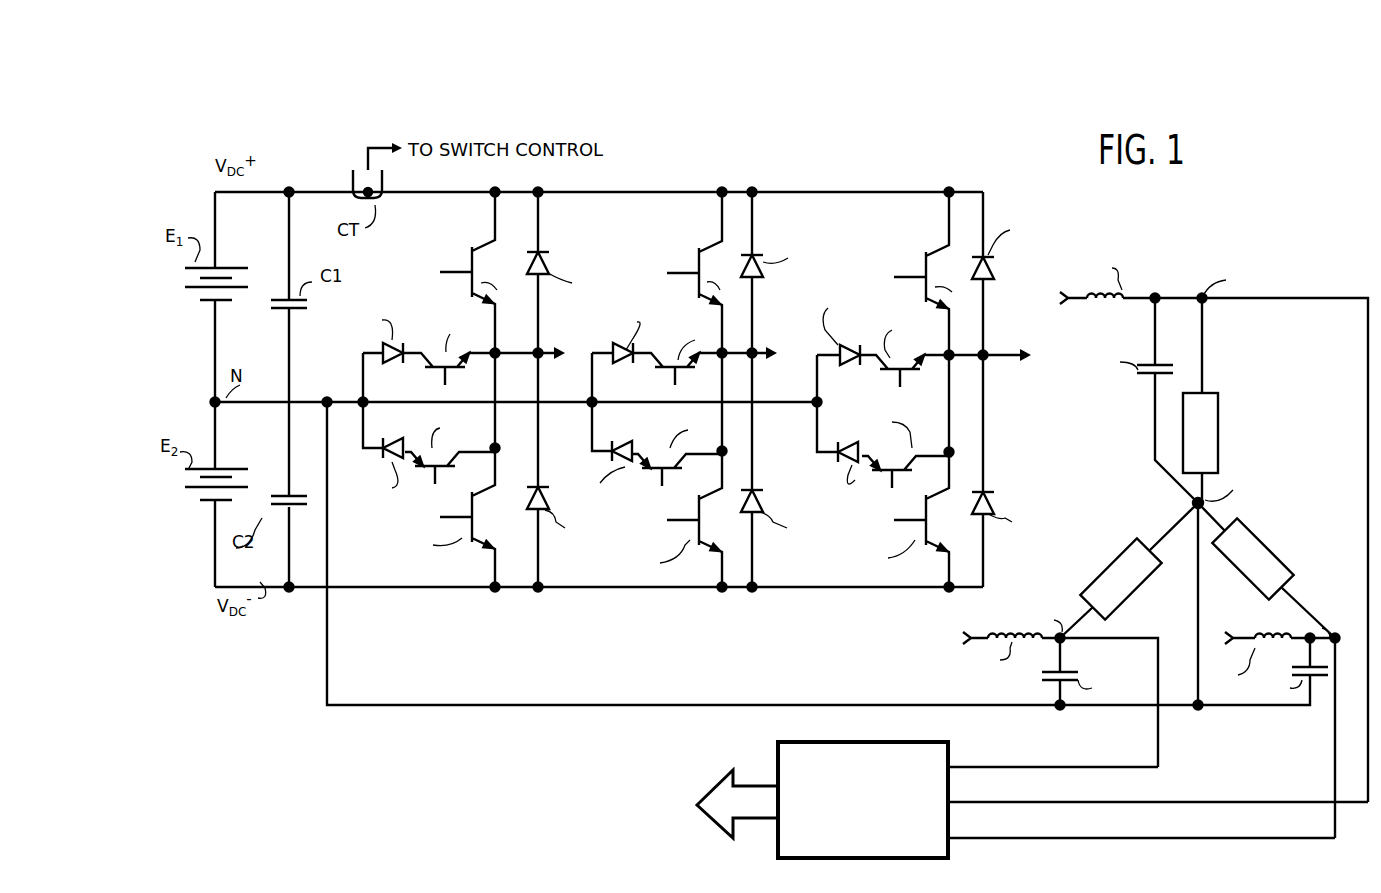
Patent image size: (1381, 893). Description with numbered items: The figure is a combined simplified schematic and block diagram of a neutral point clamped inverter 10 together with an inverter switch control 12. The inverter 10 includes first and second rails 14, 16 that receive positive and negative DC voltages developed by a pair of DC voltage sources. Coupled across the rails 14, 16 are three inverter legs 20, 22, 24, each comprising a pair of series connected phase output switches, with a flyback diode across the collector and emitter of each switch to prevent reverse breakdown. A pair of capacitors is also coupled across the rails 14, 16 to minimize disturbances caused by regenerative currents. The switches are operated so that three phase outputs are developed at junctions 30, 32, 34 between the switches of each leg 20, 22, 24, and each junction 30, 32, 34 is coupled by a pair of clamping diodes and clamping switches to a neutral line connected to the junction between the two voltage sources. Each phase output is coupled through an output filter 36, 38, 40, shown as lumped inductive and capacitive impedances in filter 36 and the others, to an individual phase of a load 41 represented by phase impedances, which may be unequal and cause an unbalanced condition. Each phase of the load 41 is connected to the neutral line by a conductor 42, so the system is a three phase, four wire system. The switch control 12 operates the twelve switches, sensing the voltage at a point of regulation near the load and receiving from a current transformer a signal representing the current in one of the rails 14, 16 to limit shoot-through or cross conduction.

The neutral point clamped inverter 10 is at (624, 233).
The inverter switch control 12 is at (938, 742).
The first rail 14 is at (516, 192).
The second rail 16 is at (511, 592).
The inverter leg 20 is at (493, 212).
The inverter leg 22 is at (720, 212).
The inverter leg 24 is at (947, 216).
The junction 30 is at (500, 350).
The junction 32 is at (720, 358).
The junction 34 is at (950, 362).
The output filter 36 is at (1133, 283).
The output filter 38 is at (990, 610).
The output filter 40 is at (1246, 615).
The load 41 is at (1124, 492).
The conductor 42 is at (1197, 592).